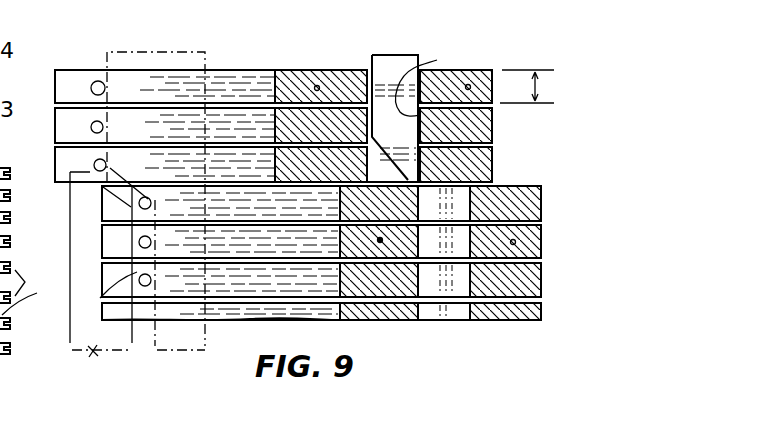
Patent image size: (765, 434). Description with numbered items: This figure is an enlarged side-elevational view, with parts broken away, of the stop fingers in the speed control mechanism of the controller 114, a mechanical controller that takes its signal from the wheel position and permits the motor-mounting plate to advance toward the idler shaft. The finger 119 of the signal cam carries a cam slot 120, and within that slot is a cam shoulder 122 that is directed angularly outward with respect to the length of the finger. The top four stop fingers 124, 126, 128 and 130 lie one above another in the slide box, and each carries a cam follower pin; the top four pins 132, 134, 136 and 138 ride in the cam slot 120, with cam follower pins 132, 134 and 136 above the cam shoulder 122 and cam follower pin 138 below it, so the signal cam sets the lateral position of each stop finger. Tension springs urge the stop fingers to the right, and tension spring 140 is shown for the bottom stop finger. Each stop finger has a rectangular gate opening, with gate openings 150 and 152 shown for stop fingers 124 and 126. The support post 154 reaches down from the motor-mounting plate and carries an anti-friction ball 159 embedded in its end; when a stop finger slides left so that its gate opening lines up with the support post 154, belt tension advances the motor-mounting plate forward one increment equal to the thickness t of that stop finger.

The controller 114 is at (501, 60).
The finger 119 is at (92, 352).
The cam slot 120 is at (100, 298).
The cam shoulder 122 is at (113, 197).
The stop finger 124 is at (220, 80).
The stop finger 126 is at (257, 100).
The stop finger 128 is at (493, 167).
The stop finger 130 is at (542, 205).
The cam follower pin 132 is at (96, 81).
The cam follower pin 134 is at (91, 127).
The cam follower pin 136 is at (94, 165).
The cam follower pin 138 is at (130, 220).
The tension spring 140 is at (85, 281).
The gate opening 150 is at (383, 77).
The gate opening 152 is at (437, 77).
The support post 154 is at (406, 56).
The anti-friction ball 159 is at (498, 128).
The thickness t is at (527, 86).